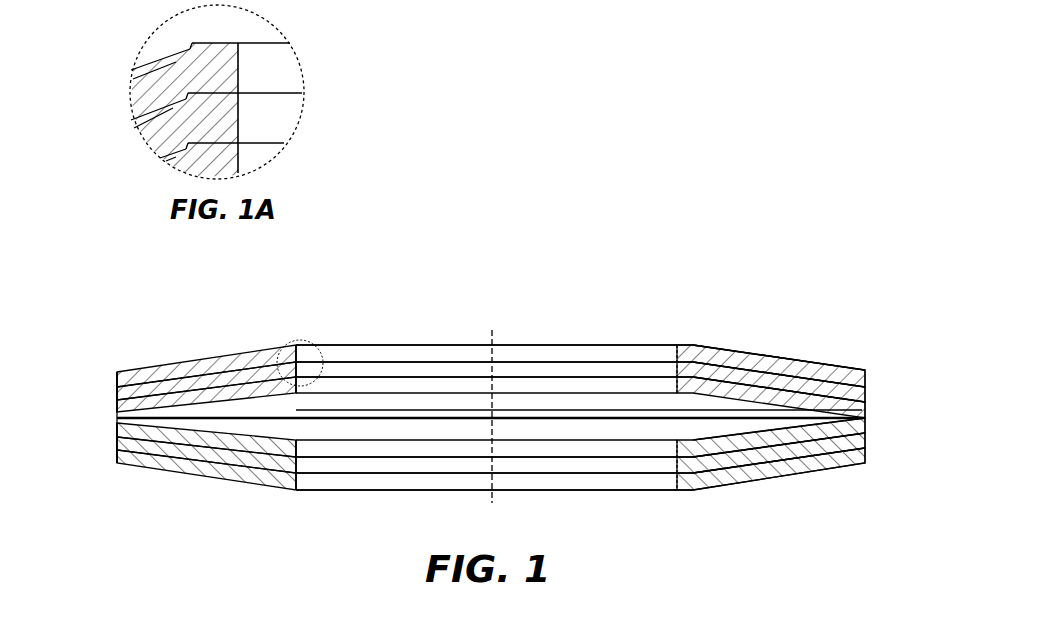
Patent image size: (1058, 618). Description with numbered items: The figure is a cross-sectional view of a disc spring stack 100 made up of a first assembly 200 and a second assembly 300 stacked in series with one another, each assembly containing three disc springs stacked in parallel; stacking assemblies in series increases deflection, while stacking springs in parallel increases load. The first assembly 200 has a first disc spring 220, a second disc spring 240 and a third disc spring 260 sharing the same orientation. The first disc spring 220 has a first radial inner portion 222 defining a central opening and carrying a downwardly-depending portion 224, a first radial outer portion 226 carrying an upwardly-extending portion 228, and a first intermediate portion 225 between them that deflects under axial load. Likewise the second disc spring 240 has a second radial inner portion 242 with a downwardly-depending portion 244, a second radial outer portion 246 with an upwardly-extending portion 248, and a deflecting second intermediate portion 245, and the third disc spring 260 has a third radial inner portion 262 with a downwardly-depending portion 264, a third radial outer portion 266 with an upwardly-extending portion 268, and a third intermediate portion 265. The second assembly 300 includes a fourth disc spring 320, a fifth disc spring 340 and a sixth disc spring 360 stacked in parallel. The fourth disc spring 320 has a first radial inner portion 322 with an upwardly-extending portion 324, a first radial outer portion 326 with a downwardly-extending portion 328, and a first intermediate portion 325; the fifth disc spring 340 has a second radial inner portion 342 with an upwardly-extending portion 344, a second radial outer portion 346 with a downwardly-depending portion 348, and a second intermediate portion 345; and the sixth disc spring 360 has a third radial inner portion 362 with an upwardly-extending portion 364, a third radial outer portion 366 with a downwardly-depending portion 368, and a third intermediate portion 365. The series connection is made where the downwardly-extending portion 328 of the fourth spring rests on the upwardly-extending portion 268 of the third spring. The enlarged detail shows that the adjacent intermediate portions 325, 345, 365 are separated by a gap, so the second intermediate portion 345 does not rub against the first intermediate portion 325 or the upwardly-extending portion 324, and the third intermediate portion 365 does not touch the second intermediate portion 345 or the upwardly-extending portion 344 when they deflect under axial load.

In FIG. 1, the disc spring stack 100 is at (528, 288).
In FIG. 1, the first assembly 200 is at (900, 420).
In FIG. 1, the first disc spring 220 is at (866, 459).
In FIG. 1, the first radial inner portion 222 is at (304, 486).
In FIG. 1, the downwardly-depending portion 224 is at (292, 488).
In FIG. 1, the first intermediate portion 225 is at (799, 471).
In FIG. 1, the first radial outer portion 226 is at (125, 465).
In FIG. 1, the upwardly-extending portion 228 is at (116, 452).
In FIG. 1, the second disc spring 240 is at (866, 444).
In FIG. 1, the second radial inner portion 242 is at (305, 465).
In FIG. 1, the downwardly-depending portion 244 is at (290, 472).
In FIG. 1, the second intermediate portion 245 is at (767, 459).
In FIG. 1, the second radial outer portion 246 is at (130, 443).
In FIG. 1, the upwardly-extending portion 248 is at (116, 437).
In FIG. 1, the third disc spring 260 is at (866, 429).
In FIG. 1, the third radial inner portion 262 is at (306, 450).
In FIG. 1, the downwardly-depending portion 264 is at (290, 457).
In FIG. 1, the third intermediate portion 265 is at (730, 449).
In FIG. 1, the third radial outer portion 266 is at (132, 431).
In FIG. 1, the upwardly-extending portion 268 is at (116, 421).
In FIG. 1, the second assembly 300 is at (900, 333).
In FIG. 1, the fourth disc spring 320 is at (866, 410).
In FIG. 1A, the first radial inner portion 322 is at (229, 157).
In FIG. 1, the first radial inner portion 322 is at (302, 387).
In FIG. 1A, the upwardly-extending portion 324 is at (228, 147).
In FIG. 1, the upwardly-extending portion 324 is at (290, 377).
In FIG. 1A, the first intermediate portion 325 is at (179, 168).
In FIG. 1, the first intermediate portion 325 is at (796, 397).
In FIG. 1, the first radial outer portion 326 is at (128, 404).
In FIG. 1, the downwardly-extending portion 328 is at (116, 407).
In FIG. 1, the fifth disc spring 340 is at (866, 395).
In FIG. 1A, the second radial inner portion 342 is at (228, 115).
In FIG. 1, the second radial inner portion 342 is at (302, 364).
In FIG. 1A, the upwardly-extending portion 344 is at (226, 98).
In FIG. 1, the upwardly-extending portion 344 is at (290, 361).
In FIG. 1A, the second intermediate portion 345 is at (151, 133).
In FIG. 1, the second intermediate portion 345 is at (773, 379).
In FIG. 1, the second radial outer portion 346 is at (128, 389).
In FIG. 1, the downwardly-depending portion 348 is at (116, 392).
In FIG. 1, the sixth disc spring 360 is at (866, 380).
In FIG. 1A, the third radial inner portion 362 is at (229, 73).
In FIG. 1, the third radial inner portion 362 is at (300, 351).
In FIG. 1A, the upwardly-extending portion 364 is at (228, 45).
In FIG. 1, the upwardly-extending portion 364 is at (291, 346).
In FIG. 1A, the third intermediate portion 365 is at (141, 85).
In FIG. 1, the third intermediate portion 365 is at (748, 361).
In FIG. 1, the third radial outer portion 366 is at (121, 370).
In FIG. 1, the downwardly-depending portion 368 is at (116, 378).